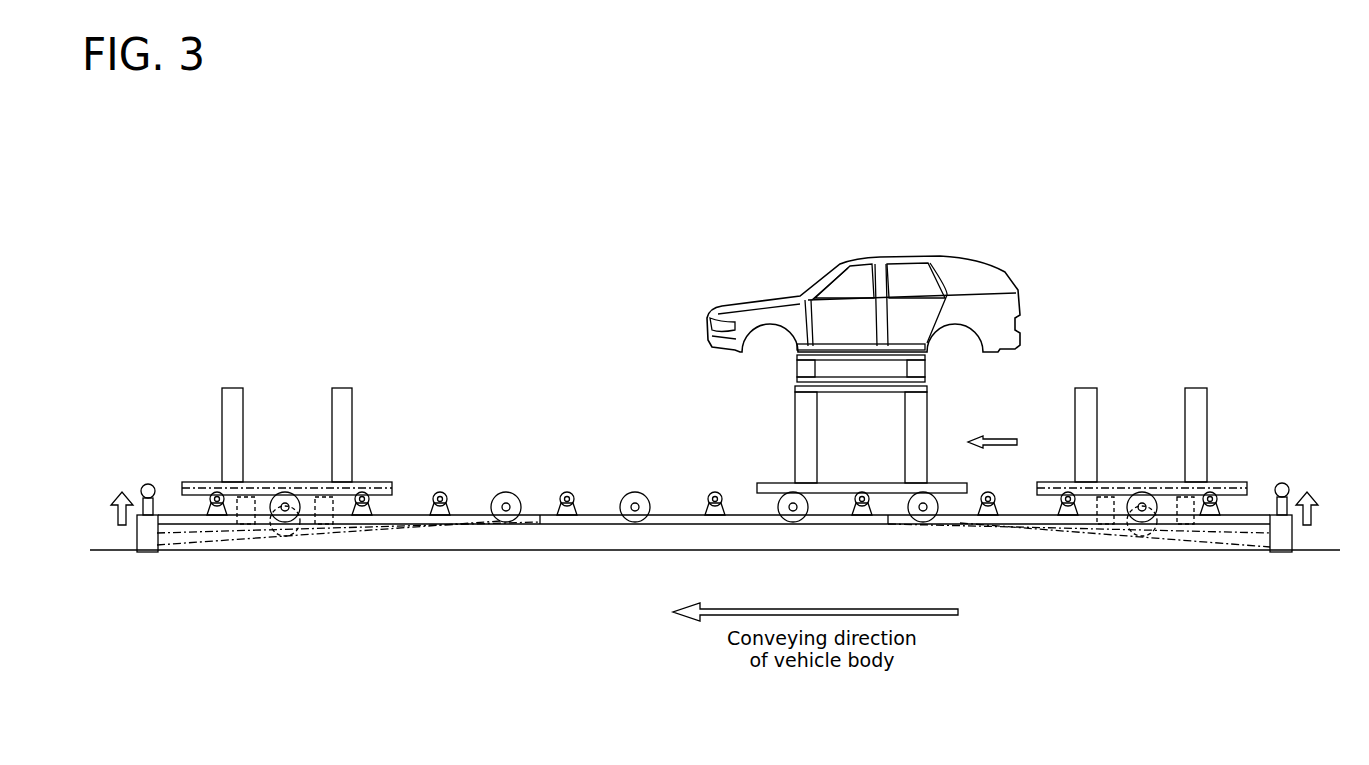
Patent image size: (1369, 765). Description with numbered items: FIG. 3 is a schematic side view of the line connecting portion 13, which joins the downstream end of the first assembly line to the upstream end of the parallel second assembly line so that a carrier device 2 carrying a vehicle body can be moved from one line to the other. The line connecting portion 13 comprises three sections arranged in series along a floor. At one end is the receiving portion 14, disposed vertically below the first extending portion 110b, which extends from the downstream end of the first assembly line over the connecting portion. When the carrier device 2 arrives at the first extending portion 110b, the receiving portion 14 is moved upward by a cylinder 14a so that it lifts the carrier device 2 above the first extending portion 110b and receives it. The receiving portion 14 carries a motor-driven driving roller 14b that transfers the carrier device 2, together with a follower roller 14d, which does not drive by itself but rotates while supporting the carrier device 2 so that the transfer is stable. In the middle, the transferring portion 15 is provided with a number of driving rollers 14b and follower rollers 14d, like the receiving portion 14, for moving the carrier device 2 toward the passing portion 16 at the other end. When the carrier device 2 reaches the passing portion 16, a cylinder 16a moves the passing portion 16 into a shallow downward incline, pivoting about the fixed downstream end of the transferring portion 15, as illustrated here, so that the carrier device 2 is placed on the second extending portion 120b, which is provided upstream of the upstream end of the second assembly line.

The carrier device 2 is at (352, 415).
The line connecting portion 13 is at (606, 586).
The receiving portion 14 is at (1012, 513).
The cylinder 14a is at (1285, 483).
The driving roller 14b is at (643, 495).
The follower roller 14d is at (567, 490).
The transferring portion 15 is at (742, 513).
The passing portion 16 is at (165, 514).
The cylinder 16a is at (146, 484).
The first extending portion 110b is at (1103, 548).
The second extending portion 120b is at (322, 550).